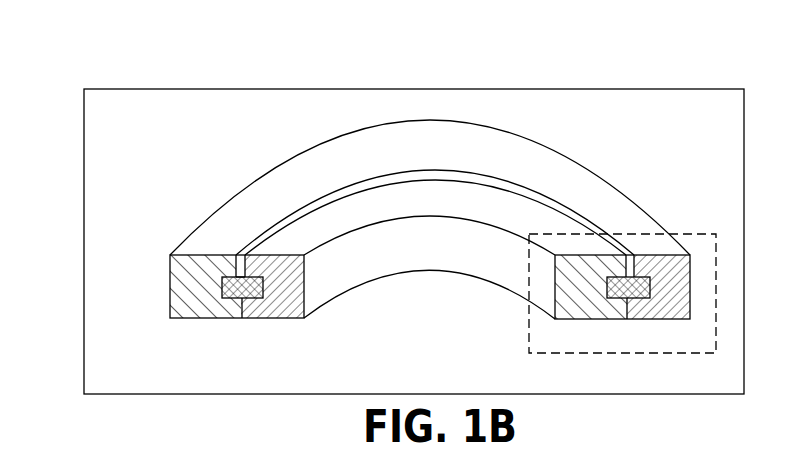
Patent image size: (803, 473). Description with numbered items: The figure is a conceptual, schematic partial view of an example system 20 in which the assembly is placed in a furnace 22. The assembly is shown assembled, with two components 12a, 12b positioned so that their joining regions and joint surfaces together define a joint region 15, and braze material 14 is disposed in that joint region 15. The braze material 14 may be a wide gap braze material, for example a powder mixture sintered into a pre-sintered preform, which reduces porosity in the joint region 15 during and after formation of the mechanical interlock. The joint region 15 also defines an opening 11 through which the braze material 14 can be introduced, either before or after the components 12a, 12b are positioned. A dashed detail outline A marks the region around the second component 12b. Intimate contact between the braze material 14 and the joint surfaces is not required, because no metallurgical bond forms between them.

The system 20 is at (92, 58).
The furnace 22 is at (728, 88).
The opening 11 is at (294, 204).
The braze material 14 is at (226, 276).
The joint region 15 is at (263, 288).
The component 12a is at (168, 318).
The component 12b is at (585, 319).
The detail region A is at (622, 272).